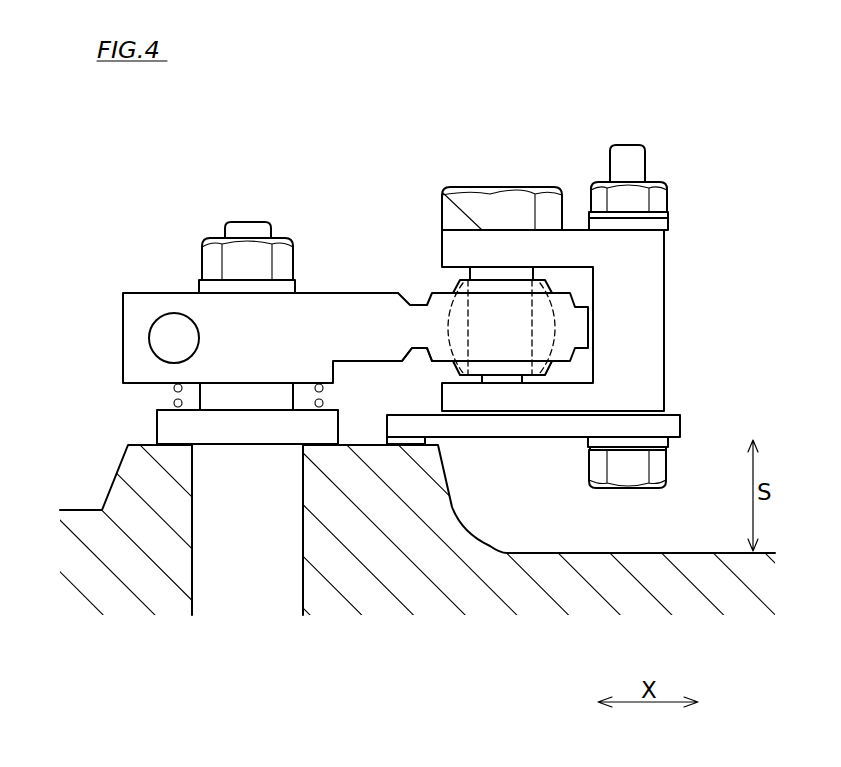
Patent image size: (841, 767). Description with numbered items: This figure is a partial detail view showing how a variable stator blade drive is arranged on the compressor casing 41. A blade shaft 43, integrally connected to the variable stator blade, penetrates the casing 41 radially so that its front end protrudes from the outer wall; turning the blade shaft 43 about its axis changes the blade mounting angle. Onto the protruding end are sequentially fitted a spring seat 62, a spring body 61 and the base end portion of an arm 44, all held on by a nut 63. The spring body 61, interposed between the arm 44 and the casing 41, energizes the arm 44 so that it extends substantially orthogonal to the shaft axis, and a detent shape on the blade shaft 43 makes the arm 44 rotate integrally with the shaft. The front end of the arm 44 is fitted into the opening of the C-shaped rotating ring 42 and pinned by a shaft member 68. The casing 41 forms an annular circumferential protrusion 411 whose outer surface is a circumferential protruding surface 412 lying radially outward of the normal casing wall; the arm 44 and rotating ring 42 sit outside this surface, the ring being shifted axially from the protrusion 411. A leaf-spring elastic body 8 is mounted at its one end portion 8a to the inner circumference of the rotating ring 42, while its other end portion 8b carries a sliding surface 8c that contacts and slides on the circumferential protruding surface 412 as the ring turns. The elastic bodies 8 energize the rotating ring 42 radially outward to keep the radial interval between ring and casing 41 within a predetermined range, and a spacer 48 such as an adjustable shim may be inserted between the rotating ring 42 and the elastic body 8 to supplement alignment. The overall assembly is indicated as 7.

The support device 7 is at (350, 100).
The elastic body 8 is at (574, 375).
The one end portion of the elastic body 8a is at (680, 421).
The other end portion of the elastic body 8b is at (402, 360).
The sliding surface 8c is at (422, 448).
The casing 41 is at (416, 422).
The circumferential protrusion 411 is at (108, 492).
The circumferential protruding surface 412 is at (340, 374).
The rotating ring 42 is at (665, 262).
The blade shaft 43 is at (247, 222).
The arm 44 is at (126, 292).
The spacer 48 is at (668, 393).
The spring body 61 is at (656, 182).
The spring seat 62 is at (157, 430).
The nut 63 is at (203, 238).
The shaft member 68 is at (490, 187).